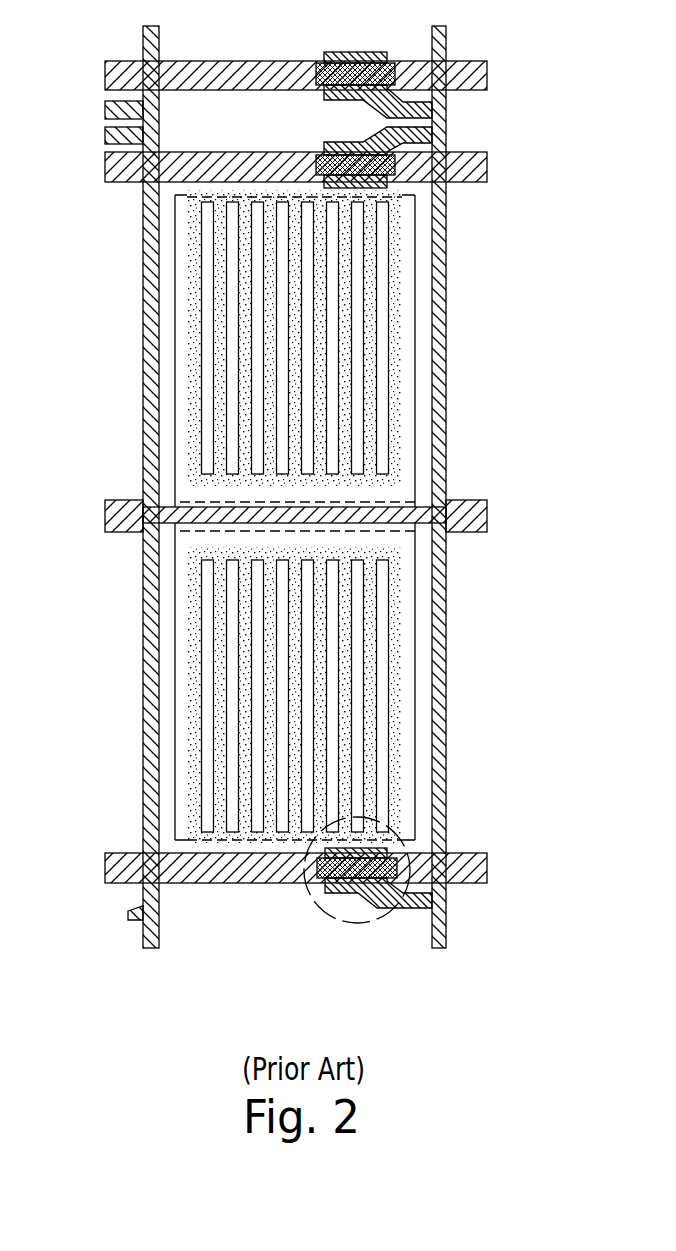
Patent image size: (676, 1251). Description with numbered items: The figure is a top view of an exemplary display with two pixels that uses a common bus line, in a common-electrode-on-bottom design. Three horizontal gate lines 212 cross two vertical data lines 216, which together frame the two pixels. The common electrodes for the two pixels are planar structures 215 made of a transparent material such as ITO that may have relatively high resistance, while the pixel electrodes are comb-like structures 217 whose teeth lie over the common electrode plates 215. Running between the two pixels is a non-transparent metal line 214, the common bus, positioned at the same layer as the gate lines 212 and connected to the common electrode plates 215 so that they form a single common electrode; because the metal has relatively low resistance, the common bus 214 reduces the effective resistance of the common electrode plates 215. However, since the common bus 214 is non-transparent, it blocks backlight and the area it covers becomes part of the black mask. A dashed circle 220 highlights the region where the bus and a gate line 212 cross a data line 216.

The gate line 212 is at (486, 73).
The common bus line 214 is at (486, 515).
The common electrode plate 215 is at (408, 308).
The data line 216 is at (142, 373).
The pixel electrode 217 is at (400, 423).
The contact region 220 is at (317, 912).